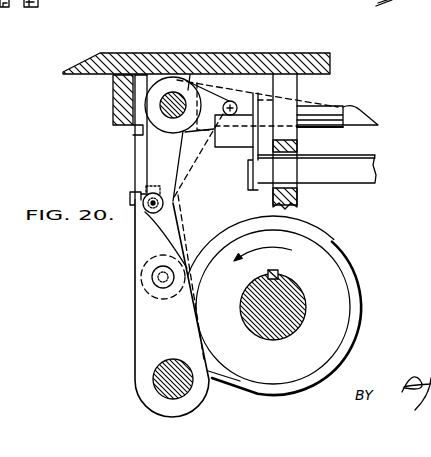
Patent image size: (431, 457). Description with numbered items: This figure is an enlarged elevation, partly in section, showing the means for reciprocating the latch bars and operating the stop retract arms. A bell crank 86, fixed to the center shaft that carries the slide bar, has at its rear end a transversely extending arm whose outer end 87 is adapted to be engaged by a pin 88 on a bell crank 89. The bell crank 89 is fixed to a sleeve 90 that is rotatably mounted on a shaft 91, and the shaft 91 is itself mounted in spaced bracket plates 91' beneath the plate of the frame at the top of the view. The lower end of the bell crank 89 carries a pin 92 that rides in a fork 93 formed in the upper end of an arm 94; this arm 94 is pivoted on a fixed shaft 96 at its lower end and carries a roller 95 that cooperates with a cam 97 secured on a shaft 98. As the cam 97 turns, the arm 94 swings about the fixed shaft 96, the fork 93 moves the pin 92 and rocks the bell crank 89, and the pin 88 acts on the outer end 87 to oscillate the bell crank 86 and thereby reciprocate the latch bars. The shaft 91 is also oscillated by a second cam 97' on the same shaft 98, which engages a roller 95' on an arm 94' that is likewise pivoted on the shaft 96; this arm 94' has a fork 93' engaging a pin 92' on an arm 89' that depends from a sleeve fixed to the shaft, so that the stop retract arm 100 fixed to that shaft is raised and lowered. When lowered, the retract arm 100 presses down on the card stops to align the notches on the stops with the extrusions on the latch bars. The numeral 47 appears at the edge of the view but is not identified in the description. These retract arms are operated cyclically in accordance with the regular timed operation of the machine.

The housing 47 is at (30, 6).
The bell crank 86 is at (257, 93).
The outer end 87 is at (232, 140).
The pin 88 is at (234, 103).
The bell crank 89 is at (156, 138).
The arm 89' is at (104, 185).
The sleeve 90 is at (177, 82).
The shaft 91 is at (129, 105).
The bracket plates 91' is at (155, 48).
The pin 92 is at (126, 223).
The pin 92' is at (114, 189).
The fork 93 is at (143, 248).
The fork 93' is at (156, 191).
The arm 94 is at (150, 308).
The arm 94' is at (142, 277).
The roller 95 is at (132, 298).
The roller 95' is at (137, 284).
The fixed shaft 96 is at (160, 392).
The cam 97 is at (294, 312).
The cam 97' is at (282, 245).
The shaft 98 is at (298, 320).
The stop retract arm 100 is at (358, 118).